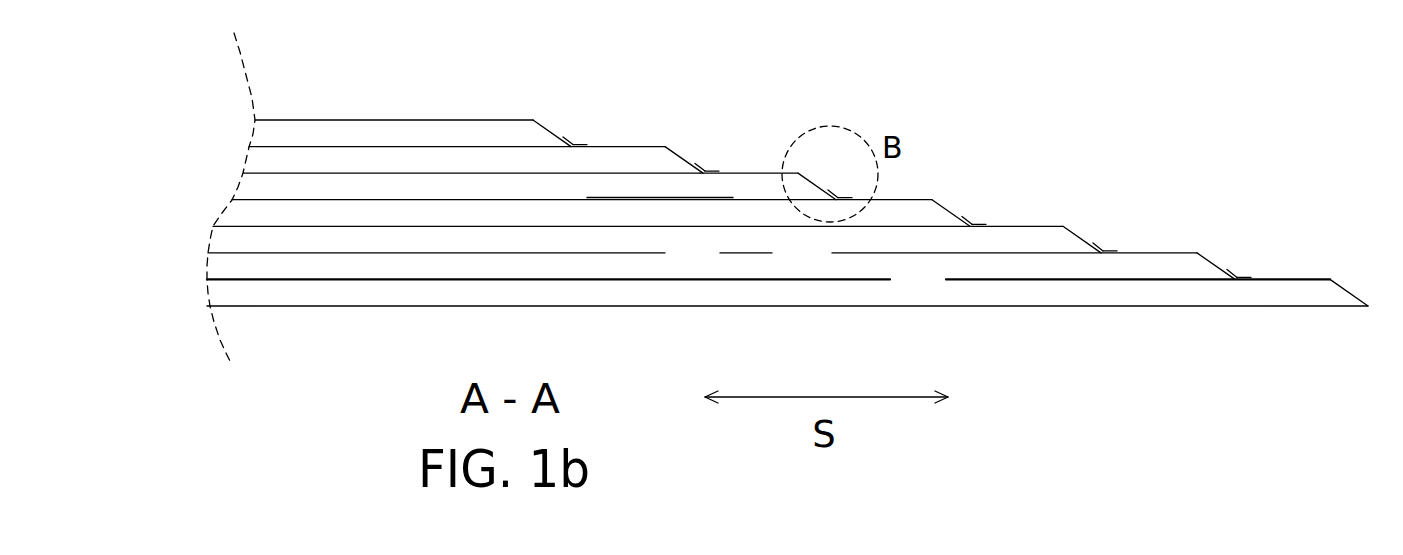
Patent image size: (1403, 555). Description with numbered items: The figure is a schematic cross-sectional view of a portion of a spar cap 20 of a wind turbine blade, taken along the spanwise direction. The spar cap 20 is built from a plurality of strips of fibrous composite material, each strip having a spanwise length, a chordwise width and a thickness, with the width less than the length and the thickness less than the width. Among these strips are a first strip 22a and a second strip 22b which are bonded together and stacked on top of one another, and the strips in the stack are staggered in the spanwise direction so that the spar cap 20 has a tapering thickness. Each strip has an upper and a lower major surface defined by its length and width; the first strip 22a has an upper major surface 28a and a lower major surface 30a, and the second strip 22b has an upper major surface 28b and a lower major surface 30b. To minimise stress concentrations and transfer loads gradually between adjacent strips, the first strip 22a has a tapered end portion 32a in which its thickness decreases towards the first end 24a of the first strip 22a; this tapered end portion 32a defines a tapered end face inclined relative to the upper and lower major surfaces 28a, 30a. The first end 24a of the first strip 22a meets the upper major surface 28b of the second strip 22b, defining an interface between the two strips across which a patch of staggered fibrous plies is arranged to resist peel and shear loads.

The spar cap 20 is at (357, 44).
The first strip 22a is at (250, 190).
The second strip 22b is at (237, 218).
The first end of the first strip 24a is at (823, 211).
The upper major surface of the first strip 28a is at (763, 172).
The upper major surface of the second strip 28b is at (918, 198).
The lower major surface of the first strip 30a is at (736, 202).
The lower major surface of the second strip 30b is at (940, 228).
The tapered end portion 32a is at (823, 166).